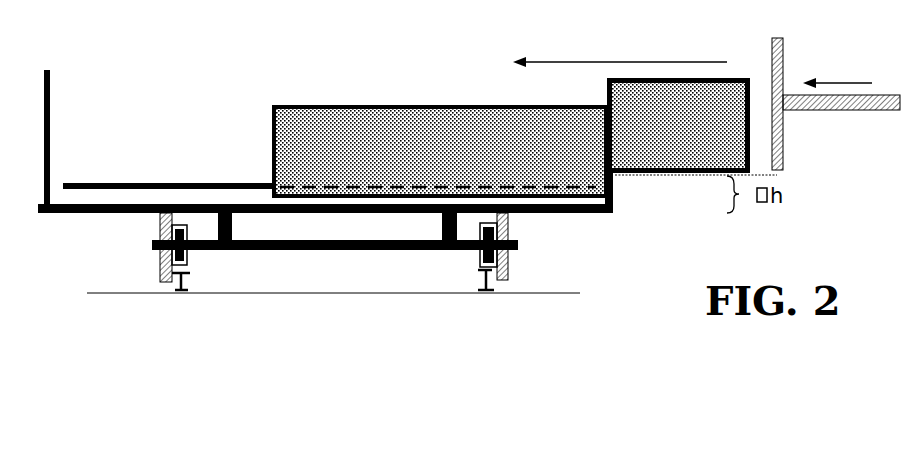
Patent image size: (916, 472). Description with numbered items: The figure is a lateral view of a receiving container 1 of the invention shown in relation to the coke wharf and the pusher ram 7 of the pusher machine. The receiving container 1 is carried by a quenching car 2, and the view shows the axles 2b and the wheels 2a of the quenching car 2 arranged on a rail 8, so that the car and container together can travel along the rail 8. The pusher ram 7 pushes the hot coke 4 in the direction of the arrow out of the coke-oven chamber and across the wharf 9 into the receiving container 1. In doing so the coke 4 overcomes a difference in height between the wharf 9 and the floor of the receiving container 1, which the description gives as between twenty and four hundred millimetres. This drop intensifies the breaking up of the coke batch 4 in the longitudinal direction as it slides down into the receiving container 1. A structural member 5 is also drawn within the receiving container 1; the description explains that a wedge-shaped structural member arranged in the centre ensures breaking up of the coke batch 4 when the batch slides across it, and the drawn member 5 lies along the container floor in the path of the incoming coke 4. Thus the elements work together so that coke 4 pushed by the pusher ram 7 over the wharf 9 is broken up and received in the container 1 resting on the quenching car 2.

The receiving container 1 is at (51, 88).
The quenching car 2 is at (621, 211).
The wheels 2a is at (505, 282).
The axles 2b is at (293, 250).
The coke 4 is at (352, 106).
The support shelf 5 is at (163, 184).
The pusher ram 7 is at (833, 110).
The rail 8 is at (475, 292).
The wharf 9 is at (665, 178).